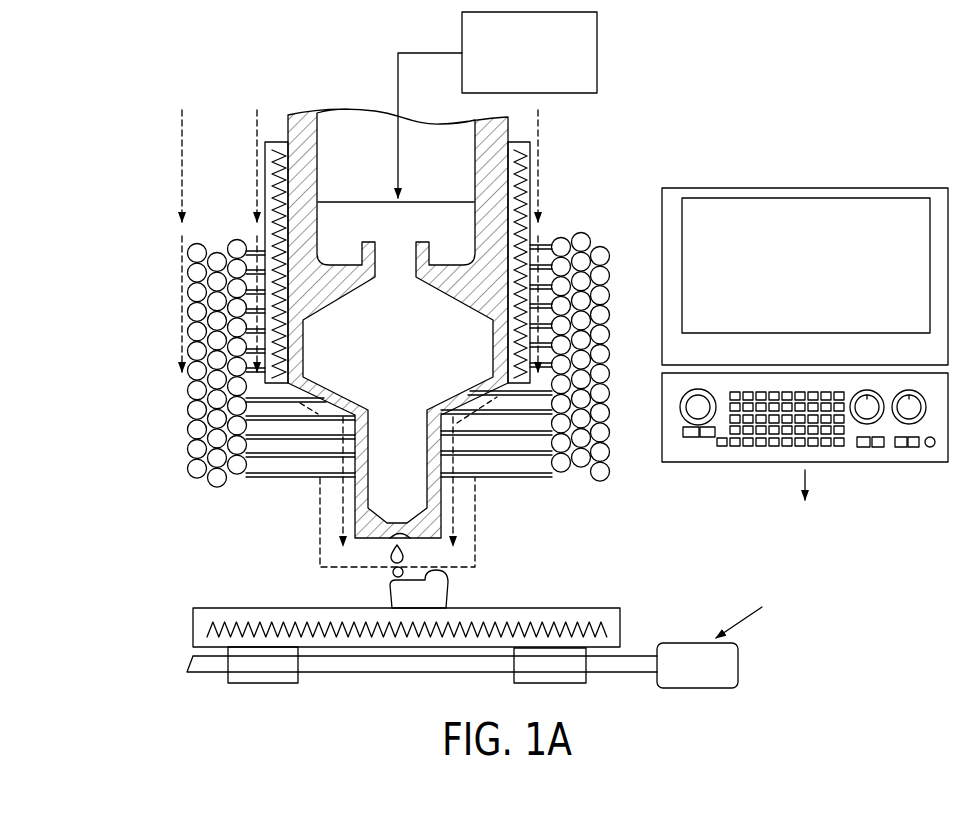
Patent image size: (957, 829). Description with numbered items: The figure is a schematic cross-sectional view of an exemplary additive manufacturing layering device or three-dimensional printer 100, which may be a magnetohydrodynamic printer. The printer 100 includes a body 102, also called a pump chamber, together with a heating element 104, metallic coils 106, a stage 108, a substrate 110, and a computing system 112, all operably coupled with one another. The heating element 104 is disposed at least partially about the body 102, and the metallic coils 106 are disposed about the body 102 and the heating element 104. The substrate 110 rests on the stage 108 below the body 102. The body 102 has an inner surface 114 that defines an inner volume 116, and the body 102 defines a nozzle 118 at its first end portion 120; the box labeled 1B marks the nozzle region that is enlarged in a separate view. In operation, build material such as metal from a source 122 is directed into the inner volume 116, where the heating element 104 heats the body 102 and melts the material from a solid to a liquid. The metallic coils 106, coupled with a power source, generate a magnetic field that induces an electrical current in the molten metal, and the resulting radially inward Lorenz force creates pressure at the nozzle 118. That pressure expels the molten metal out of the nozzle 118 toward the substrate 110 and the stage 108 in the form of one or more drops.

The 3D printer 100 is at (150, 114).
The body 102 is at (302, 110).
The heating element 104 is at (278, 134).
The metallic coil 106 is at (580, 230).
The stage 108 is at (624, 689).
The substrate 110 is at (556, 604).
The computing system 112 is at (770, 183).
The inner surface 114 is at (322, 136).
The inner volume 116 is at (412, 360).
The nozzle 118 is at (446, 505).
The first end portion 120 is at (352, 516).
The source 122 is at (543, 69).
The box labeled 1B is at (320, 492).